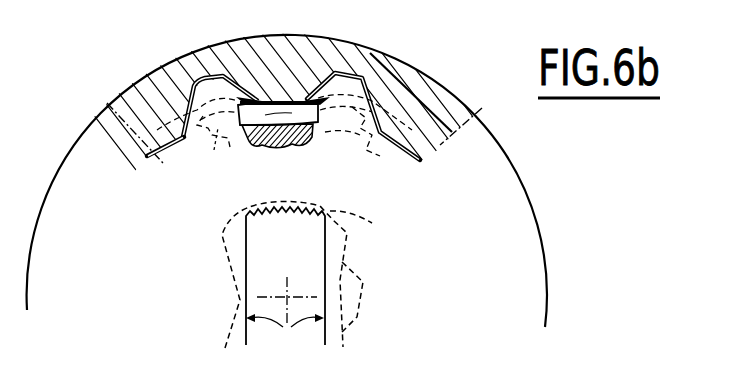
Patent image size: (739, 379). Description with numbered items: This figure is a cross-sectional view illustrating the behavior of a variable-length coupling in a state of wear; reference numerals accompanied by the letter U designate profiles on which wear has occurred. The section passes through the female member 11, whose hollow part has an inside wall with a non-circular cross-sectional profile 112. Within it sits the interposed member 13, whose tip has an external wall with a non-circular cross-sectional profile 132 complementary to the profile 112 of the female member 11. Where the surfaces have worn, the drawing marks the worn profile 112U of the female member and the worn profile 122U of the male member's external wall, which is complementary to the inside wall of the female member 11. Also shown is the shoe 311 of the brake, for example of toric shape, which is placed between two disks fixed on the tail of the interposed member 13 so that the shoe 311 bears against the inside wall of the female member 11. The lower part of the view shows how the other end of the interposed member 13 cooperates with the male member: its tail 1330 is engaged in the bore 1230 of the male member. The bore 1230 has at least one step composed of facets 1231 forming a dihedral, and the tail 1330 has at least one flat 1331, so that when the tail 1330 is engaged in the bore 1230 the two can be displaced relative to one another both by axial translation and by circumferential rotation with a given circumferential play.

The female member 11 is at (452, 112).
The non-circular cross-sectional profile 112 is at (186, 103).
The worn non-circular cross-sectional profile 112U is at (392, 114).
The non-circular cross-sectional profile 132 is at (160, 150).
The interposed member 13 is at (282, 190).
The shoe 311 is at (221, 136).
The worn non-circular cross-sectional profile 122U is at (345, 126).
The bore 1230 is at (319, 274).
The facets 1231 is at (379, 297).
The tail 1330 is at (308, 259).
The flat 1331 is at (285, 334).